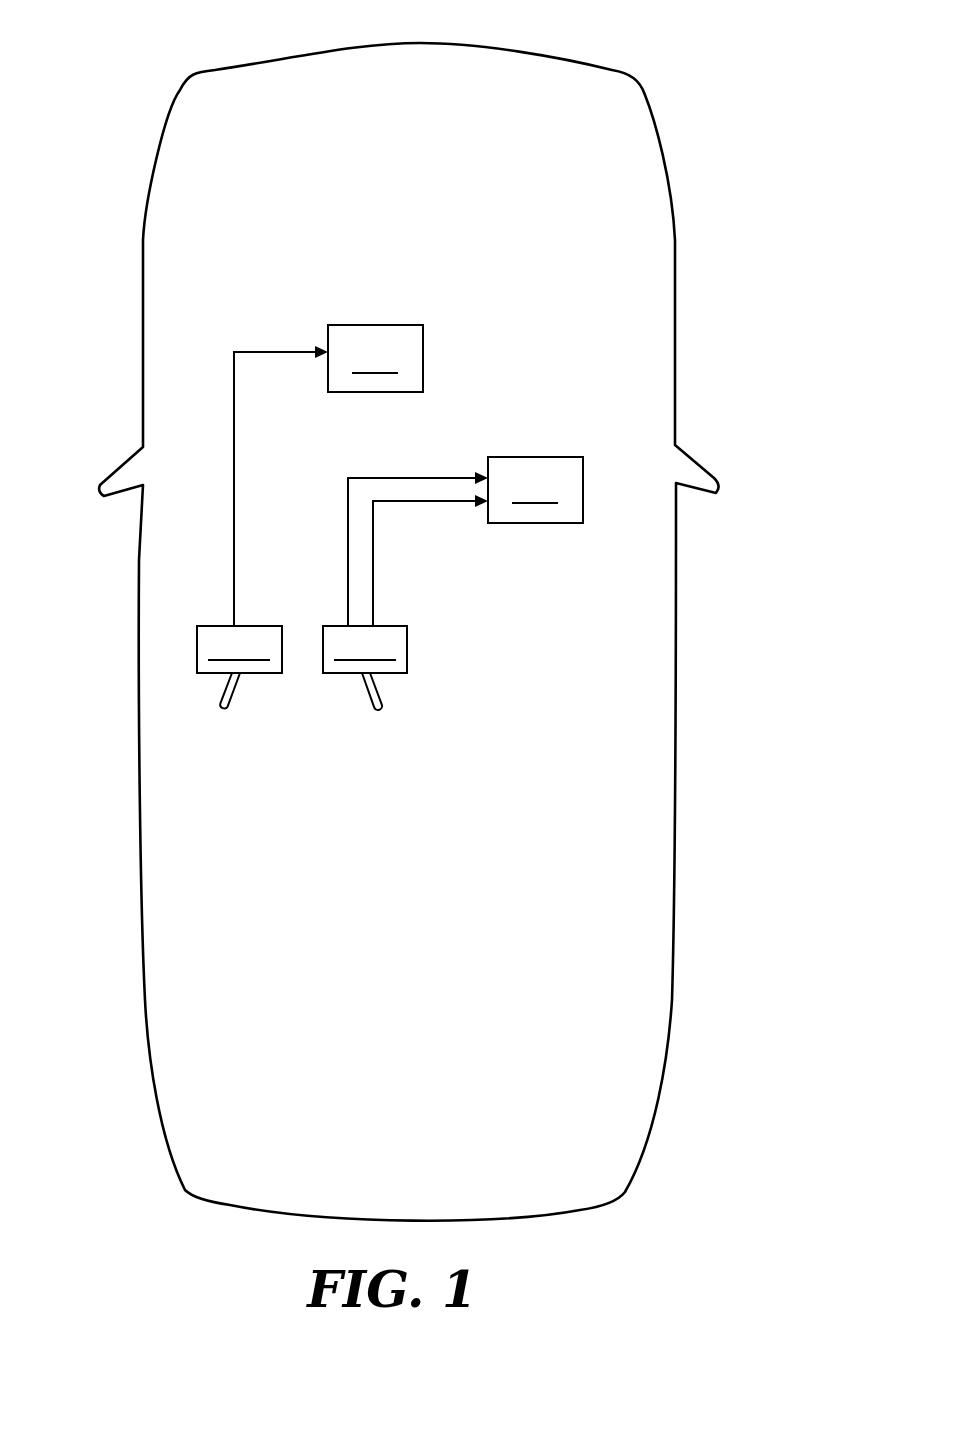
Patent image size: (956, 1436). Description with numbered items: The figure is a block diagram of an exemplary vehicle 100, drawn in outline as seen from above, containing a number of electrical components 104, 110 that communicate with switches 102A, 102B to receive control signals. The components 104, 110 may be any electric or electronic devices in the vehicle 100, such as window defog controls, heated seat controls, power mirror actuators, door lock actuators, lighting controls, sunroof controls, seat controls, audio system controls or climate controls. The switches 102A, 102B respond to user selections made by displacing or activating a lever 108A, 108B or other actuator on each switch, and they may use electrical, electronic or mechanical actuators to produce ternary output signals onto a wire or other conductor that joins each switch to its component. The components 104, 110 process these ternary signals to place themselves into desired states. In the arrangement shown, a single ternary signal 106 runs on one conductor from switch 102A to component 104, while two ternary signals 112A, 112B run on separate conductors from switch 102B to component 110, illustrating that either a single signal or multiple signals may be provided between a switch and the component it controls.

The vehicle 100 is at (636, 64).
The switch 102A is at (239, 649).
The switch 102B is at (365, 649).
The component 104 is at (375, 358).
The control signal 106 is at (234, 438).
The lever 108A is at (228, 708).
The lever 108B is at (383, 707).
The component 110 is at (535, 490).
The control signal 112A is at (435, 477).
The control signal 112B is at (373, 533).